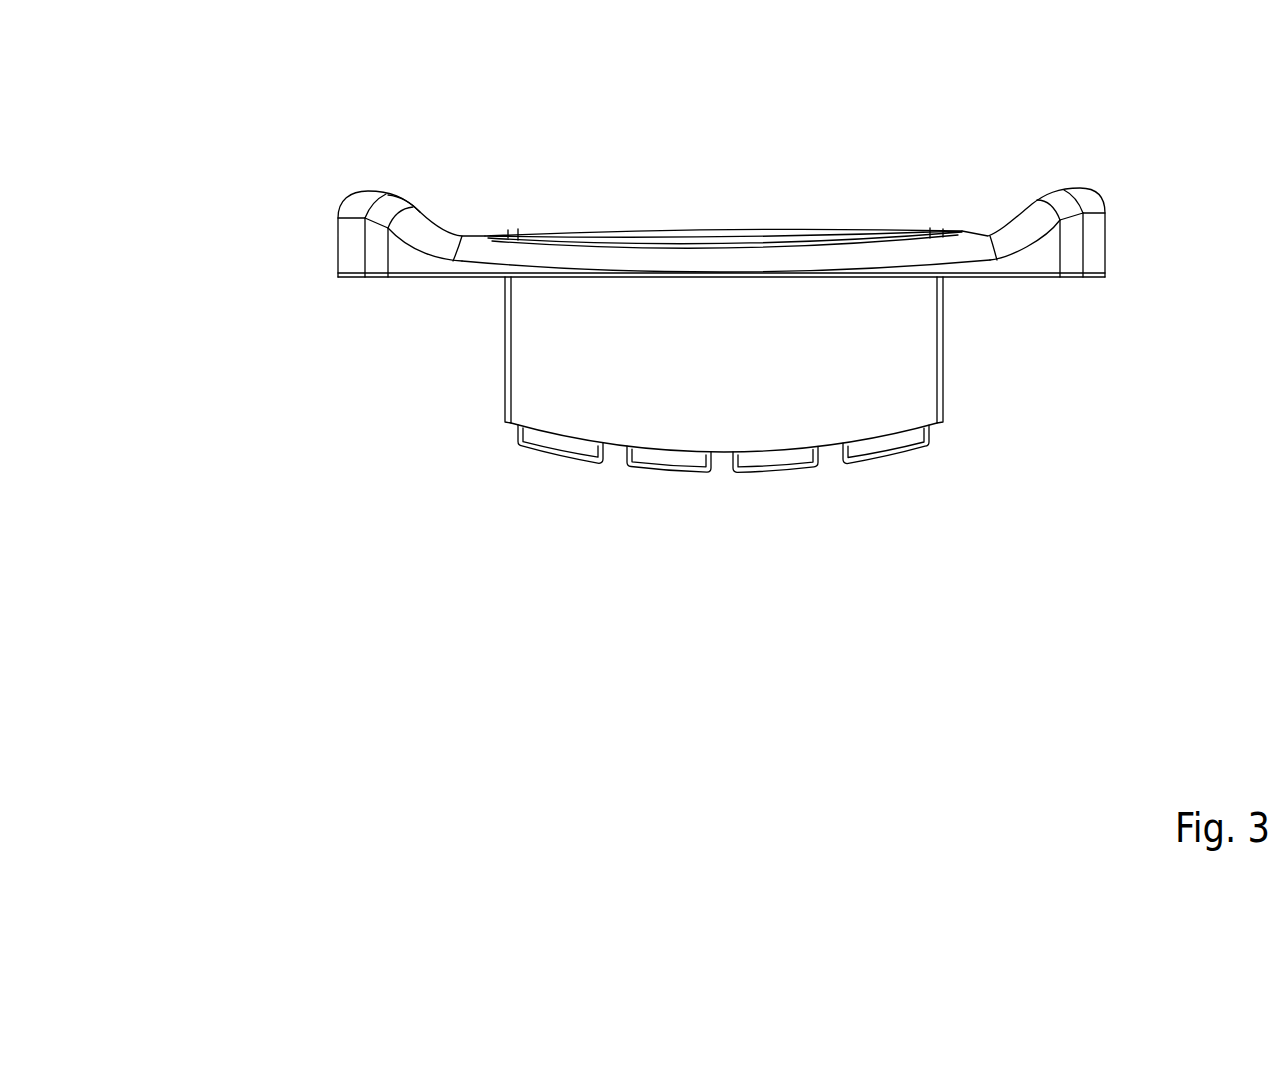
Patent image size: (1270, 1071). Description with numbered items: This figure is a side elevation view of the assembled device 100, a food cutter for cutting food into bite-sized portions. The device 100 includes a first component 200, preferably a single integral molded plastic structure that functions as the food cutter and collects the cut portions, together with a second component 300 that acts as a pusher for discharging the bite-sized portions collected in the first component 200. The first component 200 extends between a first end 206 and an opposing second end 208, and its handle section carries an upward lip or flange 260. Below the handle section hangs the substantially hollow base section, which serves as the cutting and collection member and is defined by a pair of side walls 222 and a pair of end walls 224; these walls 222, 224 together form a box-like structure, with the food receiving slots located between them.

The device 100 is at (844, 196).
The first component 200 is at (725, 335).
The first end 206 is at (325, 242).
The second end 208 is at (1119, 219).
The upward lip or flange 260 is at (424, 200).
The side walls 222 is at (709, 454).
The end walls 224 is at (491, 356).
The second component 300 is at (899, 485).